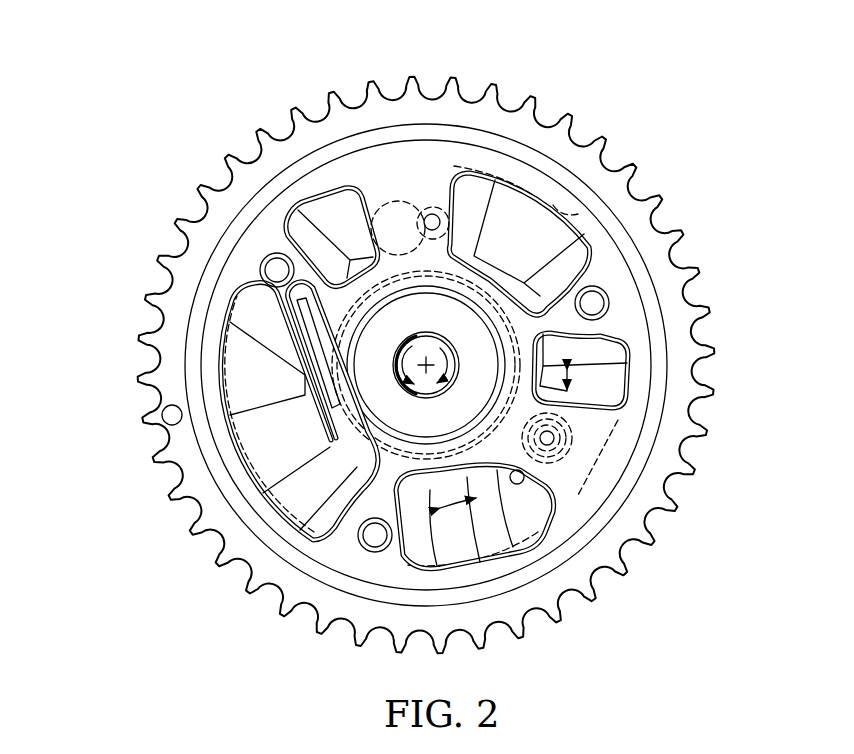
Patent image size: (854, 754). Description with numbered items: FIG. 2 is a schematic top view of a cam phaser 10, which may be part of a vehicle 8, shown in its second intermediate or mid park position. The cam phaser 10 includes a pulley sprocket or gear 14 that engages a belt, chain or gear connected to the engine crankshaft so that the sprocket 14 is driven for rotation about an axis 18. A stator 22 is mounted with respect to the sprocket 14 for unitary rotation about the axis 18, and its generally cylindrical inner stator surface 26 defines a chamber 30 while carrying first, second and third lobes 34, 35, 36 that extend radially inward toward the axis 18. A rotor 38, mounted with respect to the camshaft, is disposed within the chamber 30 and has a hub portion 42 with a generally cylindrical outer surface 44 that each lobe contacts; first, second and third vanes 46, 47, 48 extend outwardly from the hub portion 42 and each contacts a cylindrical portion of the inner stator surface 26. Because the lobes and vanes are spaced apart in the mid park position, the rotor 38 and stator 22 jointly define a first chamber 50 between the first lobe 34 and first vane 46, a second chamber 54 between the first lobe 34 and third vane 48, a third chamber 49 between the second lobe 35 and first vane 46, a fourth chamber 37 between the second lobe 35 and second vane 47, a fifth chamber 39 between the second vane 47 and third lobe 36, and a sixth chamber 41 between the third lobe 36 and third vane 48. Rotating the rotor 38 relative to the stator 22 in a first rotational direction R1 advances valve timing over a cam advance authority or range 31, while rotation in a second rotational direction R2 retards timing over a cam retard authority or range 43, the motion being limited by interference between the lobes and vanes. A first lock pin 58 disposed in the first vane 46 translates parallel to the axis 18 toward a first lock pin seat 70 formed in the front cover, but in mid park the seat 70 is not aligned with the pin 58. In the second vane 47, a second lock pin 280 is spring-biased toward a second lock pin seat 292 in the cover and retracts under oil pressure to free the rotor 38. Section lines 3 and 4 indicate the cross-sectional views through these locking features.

The vehicle 8 is at (572, 47).
The cam phaser 10 is at (624, 72).
The pulley sprocket or gear 14 is at (660, 198).
The axis 18 is at (428, 380).
The stator 22 is at (633, 323).
The inner stator surface 26 is at (577, 217).
The chamber 30 is at (293, 500).
The cam advance authority or range 31 is at (495, 542).
The first lobe 34 is at (262, 305).
The second lobe 35 is at (593, 260).
The third lobe 36 is at (440, 527).
The fourth chamber 37 is at (609, 388).
The rotor 38 is at (515, 204).
The fifth chamber 39 is at (522, 484).
The sixth chamber 41 is at (307, 497).
The hub portion 42 is at (345, 455).
The cam retard authority or range 43 is at (567, 383).
The outer surface 44 is at (246, 335).
The first vane 46 is at (432, 172).
The second vane 47 is at (613, 425).
The third vane 48 is at (263, 455).
The third chamber 49 is at (540, 168).
The first chamber 50 is at (336, 205).
The second chamber 54 is at (255, 358).
The first lock pin 58 is at (476, 197).
The first lock pin seat 70 is at (385, 205).
The second lock pin 280 is at (570, 432).
The second lock pin seat 292 is at (572, 427).
The section line 3 is at (483, 88).
The section line 4 is at (190, 178).
The first rotational direction R1 is at (447, 365).
The second rotational direction R2 is at (405, 360).